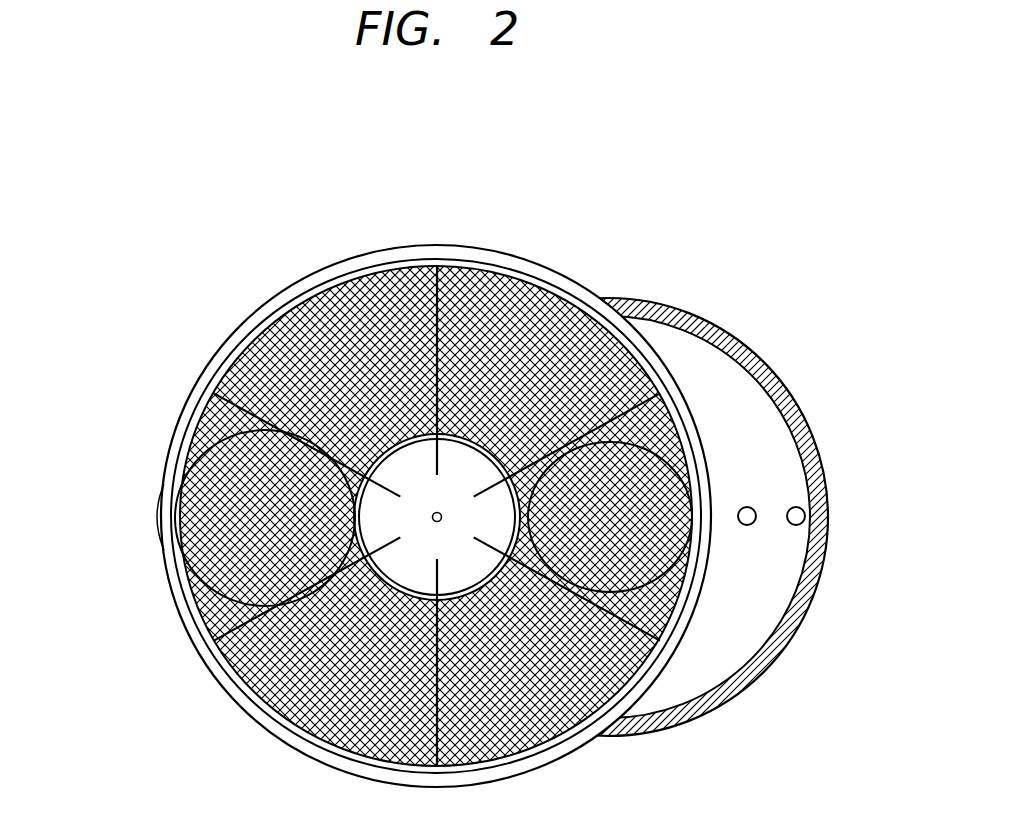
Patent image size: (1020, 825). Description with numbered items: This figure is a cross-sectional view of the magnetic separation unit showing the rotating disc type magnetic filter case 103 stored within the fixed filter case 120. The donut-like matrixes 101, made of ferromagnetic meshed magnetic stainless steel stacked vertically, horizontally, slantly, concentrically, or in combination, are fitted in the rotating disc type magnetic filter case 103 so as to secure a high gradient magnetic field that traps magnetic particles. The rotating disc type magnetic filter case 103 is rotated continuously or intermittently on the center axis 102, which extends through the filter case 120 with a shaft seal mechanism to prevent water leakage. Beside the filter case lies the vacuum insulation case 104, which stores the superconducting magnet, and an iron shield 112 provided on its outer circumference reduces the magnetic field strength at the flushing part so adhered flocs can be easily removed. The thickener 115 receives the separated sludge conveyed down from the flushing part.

The matrixes 101 is at (358, 292).
The center axis 102 is at (440, 512).
The rotating disc type magnetic filter case 103 is at (210, 392).
The vacuum insulation case 104 is at (733, 390).
The iron shield 112 is at (803, 410).
The thickener 115 is at (153, 510).
The fixed filter case 120 is at (240, 326).